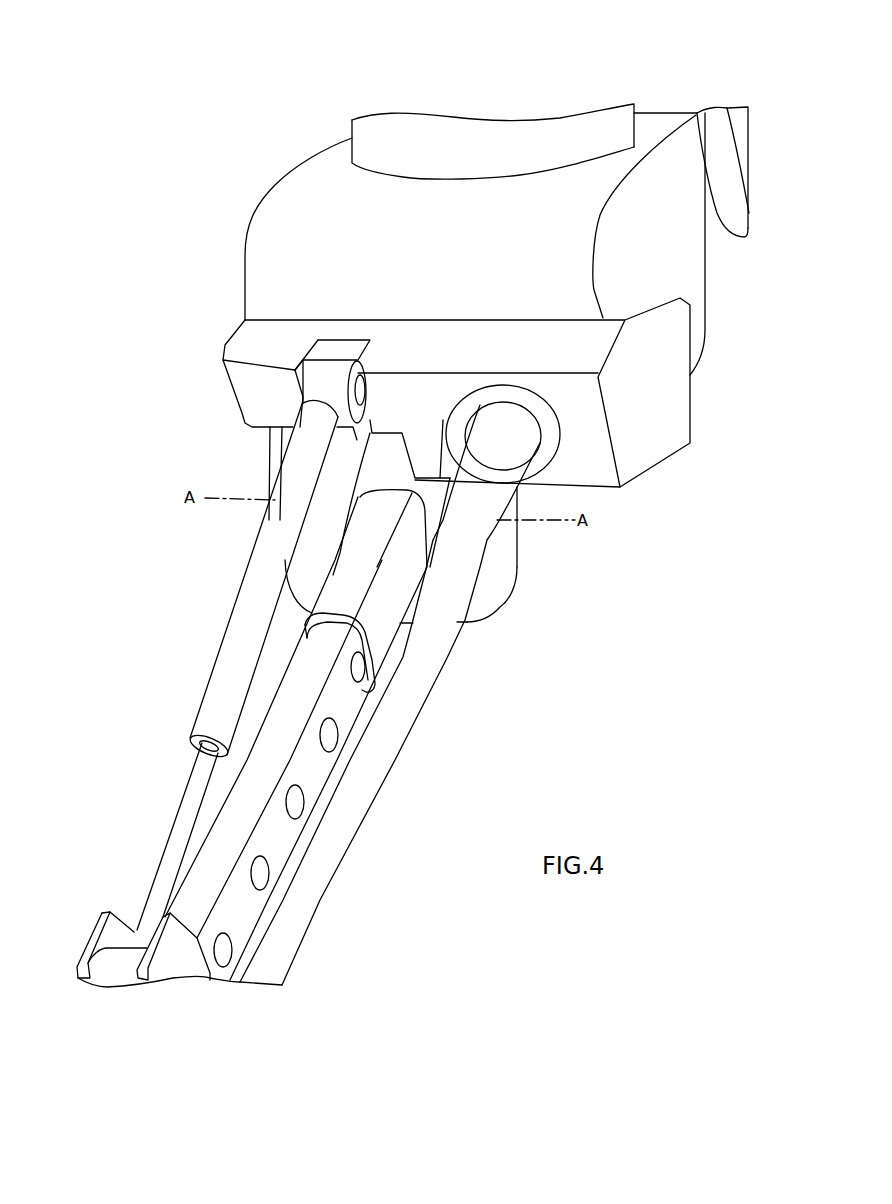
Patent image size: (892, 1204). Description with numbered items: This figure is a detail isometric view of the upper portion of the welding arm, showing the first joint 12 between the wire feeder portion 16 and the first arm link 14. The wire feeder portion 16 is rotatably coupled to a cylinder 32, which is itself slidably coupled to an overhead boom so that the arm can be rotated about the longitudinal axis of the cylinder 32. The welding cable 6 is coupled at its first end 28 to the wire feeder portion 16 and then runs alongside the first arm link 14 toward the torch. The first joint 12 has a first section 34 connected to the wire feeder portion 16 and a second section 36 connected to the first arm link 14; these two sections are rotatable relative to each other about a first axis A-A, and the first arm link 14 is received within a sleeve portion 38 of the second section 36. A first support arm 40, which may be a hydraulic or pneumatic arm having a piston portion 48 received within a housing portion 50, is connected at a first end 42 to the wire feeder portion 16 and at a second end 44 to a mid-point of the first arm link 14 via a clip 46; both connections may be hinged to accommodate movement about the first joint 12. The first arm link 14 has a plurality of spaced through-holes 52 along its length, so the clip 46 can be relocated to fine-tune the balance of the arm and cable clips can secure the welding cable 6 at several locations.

The welding cable 6 is at (330, 880).
The first joint 12 is at (500, 622).
The first arm link 14 is at (245, 918).
The wire feeder portion 16 is at (240, 237).
The first end 28 is at (535, 453).
The cylinder 32 is at (508, 143).
The first section 34 is at (327, 486).
The second section 36 is at (508, 575).
The sleeve portion 38 is at (383, 642).
The first support arm 40 is at (232, 665).
The first end 42 is at (312, 392).
The second end 44 is at (128, 918).
The clip 46 is at (80, 953).
The piston portion 48 is at (178, 815).
The housing portion 50 is at (197, 722).
The through-holes 52 is at (260, 873).